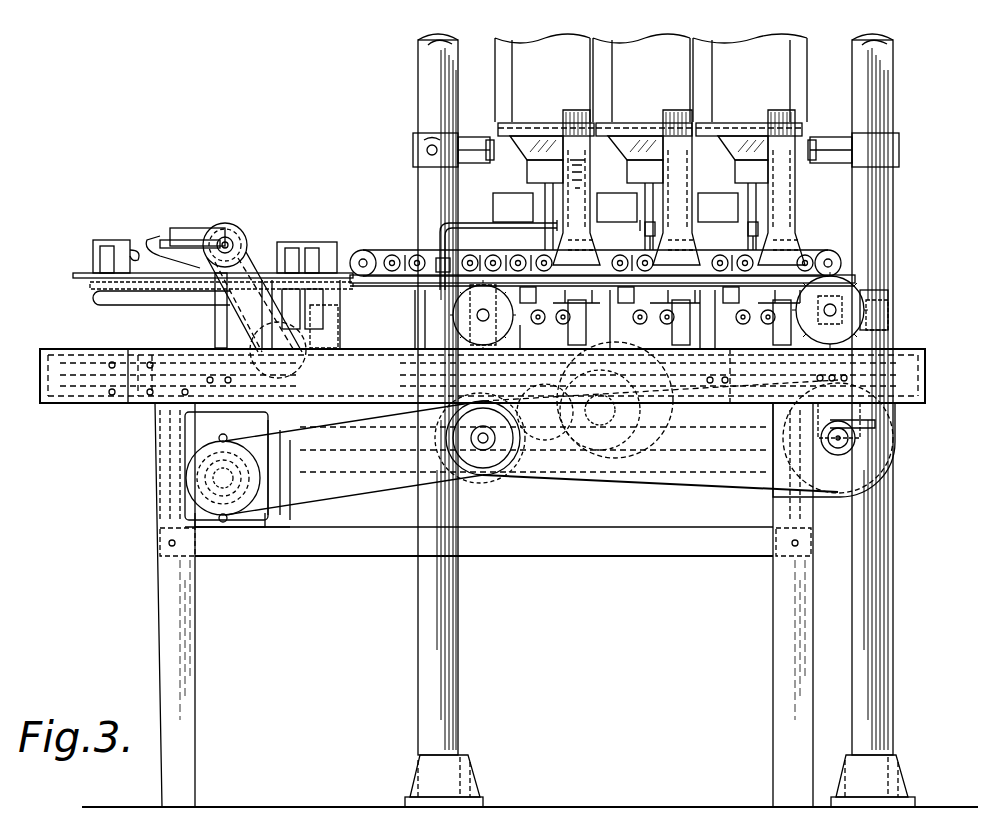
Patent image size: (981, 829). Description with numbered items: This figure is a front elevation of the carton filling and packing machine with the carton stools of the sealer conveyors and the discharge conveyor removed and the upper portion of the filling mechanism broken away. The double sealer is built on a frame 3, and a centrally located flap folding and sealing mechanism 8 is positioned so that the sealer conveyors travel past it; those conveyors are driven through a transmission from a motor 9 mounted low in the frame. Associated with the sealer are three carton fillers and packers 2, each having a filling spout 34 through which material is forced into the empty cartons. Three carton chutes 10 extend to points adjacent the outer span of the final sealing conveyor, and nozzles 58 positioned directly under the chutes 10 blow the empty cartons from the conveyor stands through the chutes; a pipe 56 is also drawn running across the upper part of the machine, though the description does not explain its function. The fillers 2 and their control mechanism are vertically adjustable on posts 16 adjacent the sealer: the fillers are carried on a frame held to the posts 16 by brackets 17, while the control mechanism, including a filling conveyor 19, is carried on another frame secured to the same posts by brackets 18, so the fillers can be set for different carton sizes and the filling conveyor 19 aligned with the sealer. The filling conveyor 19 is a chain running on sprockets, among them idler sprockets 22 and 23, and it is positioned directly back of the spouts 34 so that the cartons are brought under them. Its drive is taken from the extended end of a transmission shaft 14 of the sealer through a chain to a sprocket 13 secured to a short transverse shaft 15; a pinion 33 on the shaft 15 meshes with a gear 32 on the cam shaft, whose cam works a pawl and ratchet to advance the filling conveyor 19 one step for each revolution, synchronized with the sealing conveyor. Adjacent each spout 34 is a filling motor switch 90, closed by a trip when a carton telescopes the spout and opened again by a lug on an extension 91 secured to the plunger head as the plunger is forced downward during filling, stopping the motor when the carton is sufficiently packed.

The carton fillers and packers 2 is at (651, 108).
The frame 3 is at (172, 594).
The flap folding and sealing mechanism 8 is at (216, 218).
The motor 9 is at (260, 527).
The carton chutes 10 is at (575, 195).
The sprocket 13 is at (612, 450).
The transmission shaft 14 is at (484, 448).
The short transverse shaft 15 is at (580, 440).
The posts 16 is at (430, 72).
The brackets 17 is at (420, 135).
The brackets 18 is at (890, 302).
The filling conveyor 19 is at (890, 333).
The sprocket 22 is at (440, 265).
The sprocket 23 is at (850, 285).
The gear 32 is at (548, 470).
The pinion 33 is at (640, 460).
The filling spouts 34 is at (592, 222).
The pipe 56 is at (474, 232).
The nozzles 58 is at (592, 348).
The switch 90 is at (615, 207).
The extension 91 is at (655, 236).